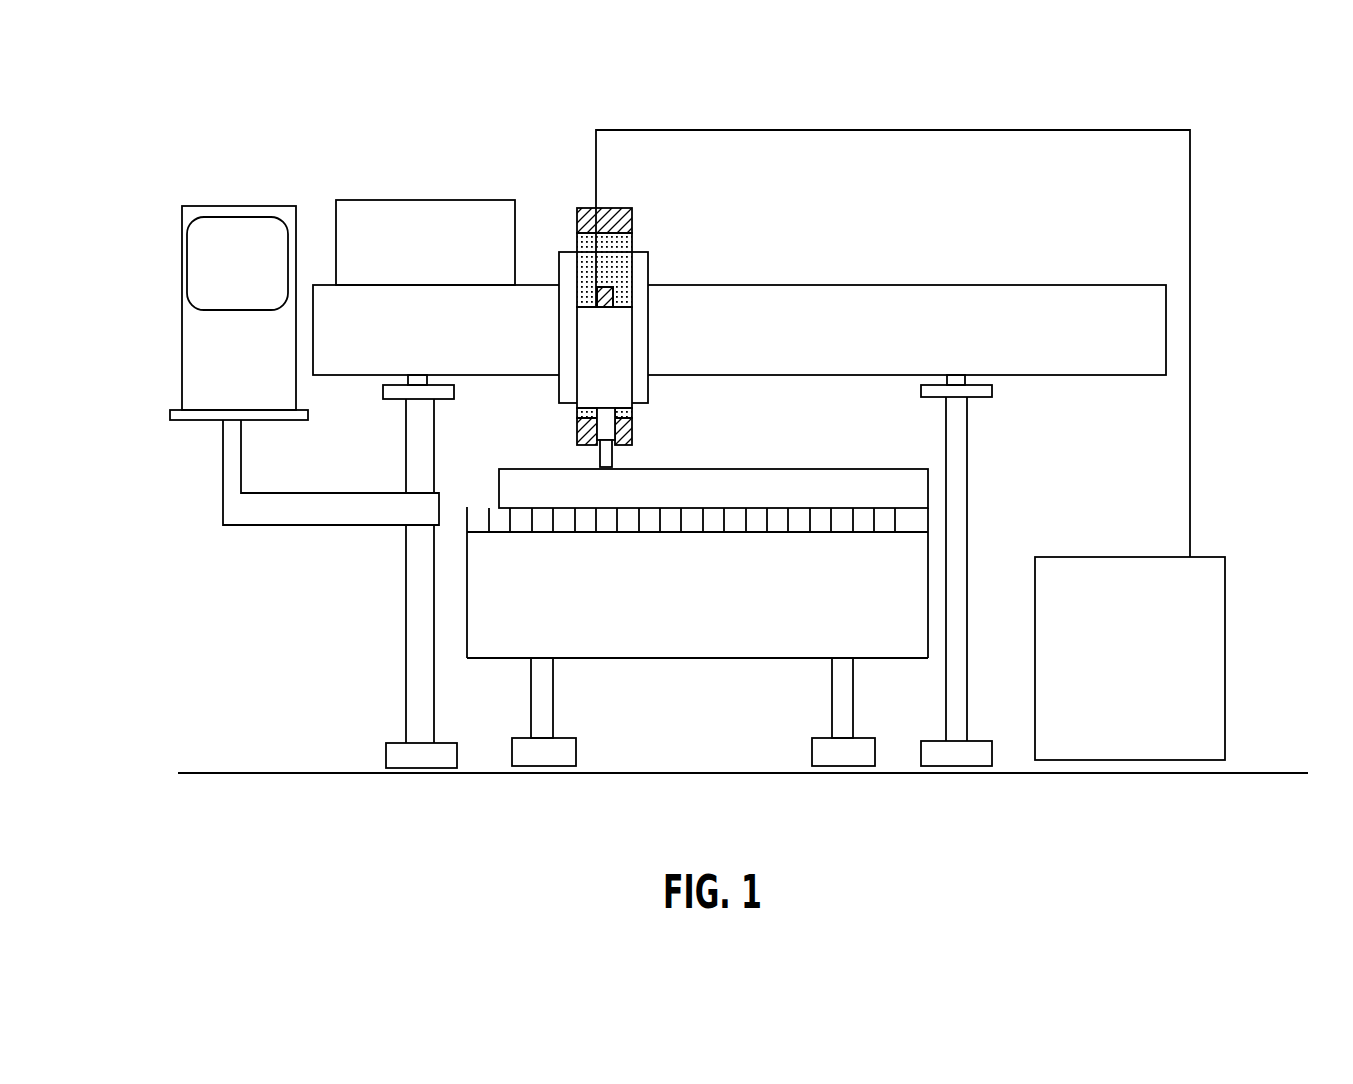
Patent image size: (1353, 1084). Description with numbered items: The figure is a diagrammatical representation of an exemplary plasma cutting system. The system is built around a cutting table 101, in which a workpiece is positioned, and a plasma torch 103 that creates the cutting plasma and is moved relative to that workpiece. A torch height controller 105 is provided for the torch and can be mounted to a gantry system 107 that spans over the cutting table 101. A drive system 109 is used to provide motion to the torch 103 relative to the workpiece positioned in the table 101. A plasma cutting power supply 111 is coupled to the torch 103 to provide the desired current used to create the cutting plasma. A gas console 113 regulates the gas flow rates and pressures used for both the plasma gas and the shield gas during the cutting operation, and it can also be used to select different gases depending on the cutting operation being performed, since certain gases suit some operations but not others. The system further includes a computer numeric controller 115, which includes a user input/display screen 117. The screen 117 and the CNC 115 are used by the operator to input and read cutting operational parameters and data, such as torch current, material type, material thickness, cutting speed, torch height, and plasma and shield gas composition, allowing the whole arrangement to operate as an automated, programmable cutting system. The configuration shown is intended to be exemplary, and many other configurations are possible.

The cutting table 101 is at (731, 658).
The plasma torch 103 is at (612, 457).
The torch height controller 105 is at (622, 225).
The gantry system 107 is at (1044, 284).
The drive system 109 is at (387, 200).
The plasma cutting power supply 111 is at (1225, 624).
The gas console 113 is at (615, 351).
The computer numeric controller (CNC) 115 is at (183, 339).
The user input/display screen 117 is at (213, 265).